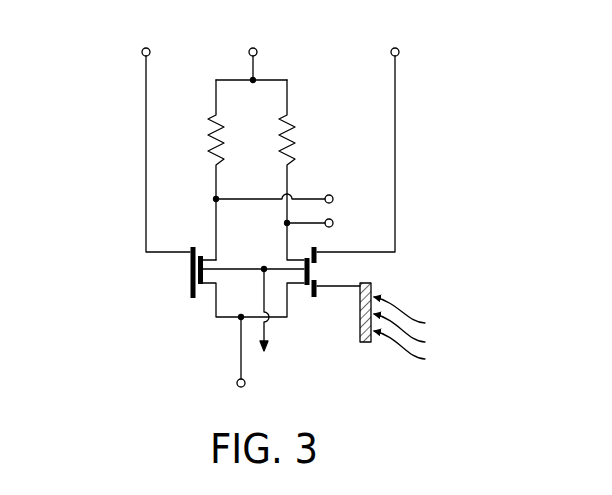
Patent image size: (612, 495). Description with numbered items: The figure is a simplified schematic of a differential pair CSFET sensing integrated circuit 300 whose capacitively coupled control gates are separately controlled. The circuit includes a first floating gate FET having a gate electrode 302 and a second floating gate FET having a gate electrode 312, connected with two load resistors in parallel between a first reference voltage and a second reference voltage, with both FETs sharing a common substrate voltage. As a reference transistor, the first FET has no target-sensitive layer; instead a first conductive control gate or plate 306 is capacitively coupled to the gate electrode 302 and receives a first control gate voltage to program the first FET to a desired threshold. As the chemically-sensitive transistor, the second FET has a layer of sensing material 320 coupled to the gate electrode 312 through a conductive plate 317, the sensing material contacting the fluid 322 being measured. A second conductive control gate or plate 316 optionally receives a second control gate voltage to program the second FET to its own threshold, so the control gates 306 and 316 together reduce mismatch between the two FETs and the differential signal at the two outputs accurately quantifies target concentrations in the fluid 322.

The differential pair CSFET sensing integrated circuit 300 is at (86, 40).
The gate electrode 302 is at (193, 298).
The first conductive control gate or plate 306 is at (190, 257).
The gate electrode 312 is at (317, 271).
The second conductive control gate or plate 316 is at (317, 248).
The conductive plate 317 is at (314, 297).
The layer of sensing material 320 is at (360, 335).
The fluid 322 is at (436, 328).